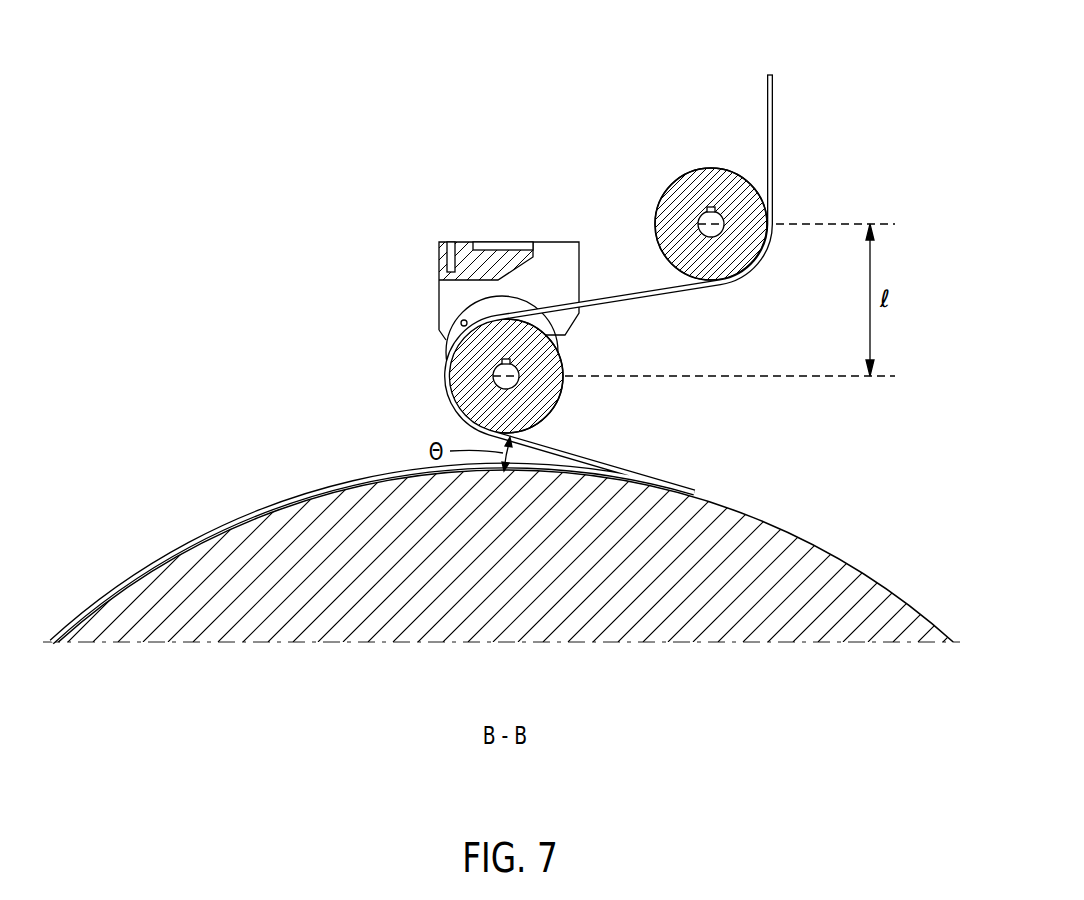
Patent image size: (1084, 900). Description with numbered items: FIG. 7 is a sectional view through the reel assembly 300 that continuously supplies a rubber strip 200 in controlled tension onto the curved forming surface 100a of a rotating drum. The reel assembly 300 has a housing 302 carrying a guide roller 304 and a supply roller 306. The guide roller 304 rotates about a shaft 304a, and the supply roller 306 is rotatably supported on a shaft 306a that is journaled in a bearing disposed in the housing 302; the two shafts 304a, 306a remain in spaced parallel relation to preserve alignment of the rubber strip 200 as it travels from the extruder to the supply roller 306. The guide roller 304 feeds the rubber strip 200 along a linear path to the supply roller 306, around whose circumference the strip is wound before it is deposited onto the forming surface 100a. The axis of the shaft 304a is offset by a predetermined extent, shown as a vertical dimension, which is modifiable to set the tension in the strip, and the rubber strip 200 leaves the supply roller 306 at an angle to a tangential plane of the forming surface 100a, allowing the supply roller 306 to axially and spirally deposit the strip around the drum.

The reel assembly 300 is at (605, 227).
The rubber strip 200 is at (770, 117).
The guide roller 304 is at (711, 172).
The shaft 304a is at (700, 228).
The housing 302 is at (443, 295).
The supply roller 306 is at (506, 378).
The shaft 306a is at (493, 380).
The forming surface 100a is at (847, 558).